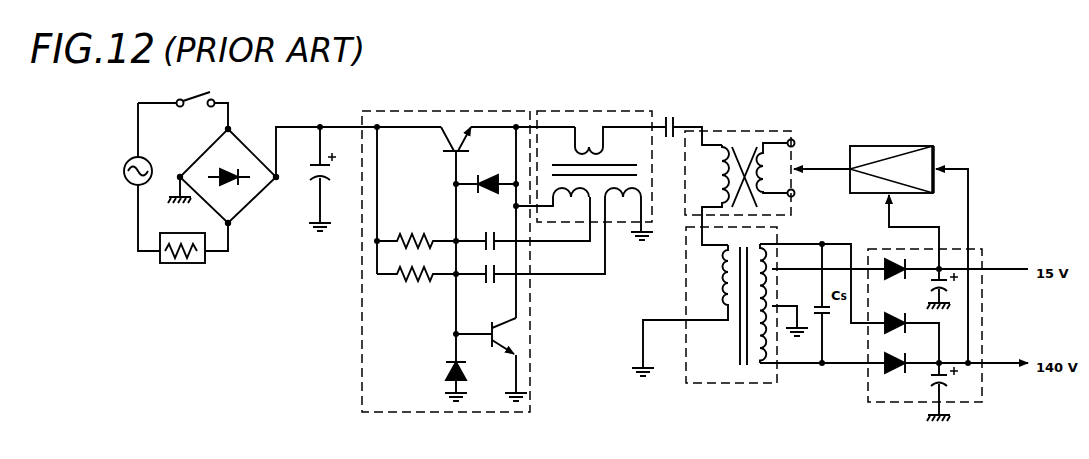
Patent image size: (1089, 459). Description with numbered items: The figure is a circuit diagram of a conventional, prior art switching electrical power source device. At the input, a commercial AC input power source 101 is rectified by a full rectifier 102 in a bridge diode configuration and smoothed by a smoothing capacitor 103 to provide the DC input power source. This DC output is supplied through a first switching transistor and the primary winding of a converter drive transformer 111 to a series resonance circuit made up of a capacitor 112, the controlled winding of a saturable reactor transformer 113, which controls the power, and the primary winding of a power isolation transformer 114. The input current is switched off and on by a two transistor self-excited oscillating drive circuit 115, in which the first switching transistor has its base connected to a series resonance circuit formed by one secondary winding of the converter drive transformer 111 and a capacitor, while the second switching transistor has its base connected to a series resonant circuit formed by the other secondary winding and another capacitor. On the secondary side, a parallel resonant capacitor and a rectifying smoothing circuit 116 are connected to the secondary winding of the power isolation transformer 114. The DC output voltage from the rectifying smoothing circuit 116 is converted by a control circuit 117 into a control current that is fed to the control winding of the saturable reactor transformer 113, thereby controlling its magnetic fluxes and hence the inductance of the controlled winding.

The commercial AC input power source 101 is at (127, 161).
The full rectifier 102 is at (247, 146).
The smoothing capacitor 103 is at (312, 172).
The converter drive transformer 111 is at (545, 110).
The capacitor 112 is at (674, 116).
The saturable reactor transformer 113 is at (748, 130).
The power isolation transformer 114 is at (735, 384).
The two transistor self-excited oscillating drive circuit 115 is at (408, 110).
The rectifying smoothing circuit 116 is at (888, 403).
The control circuit 117 is at (897, 145).